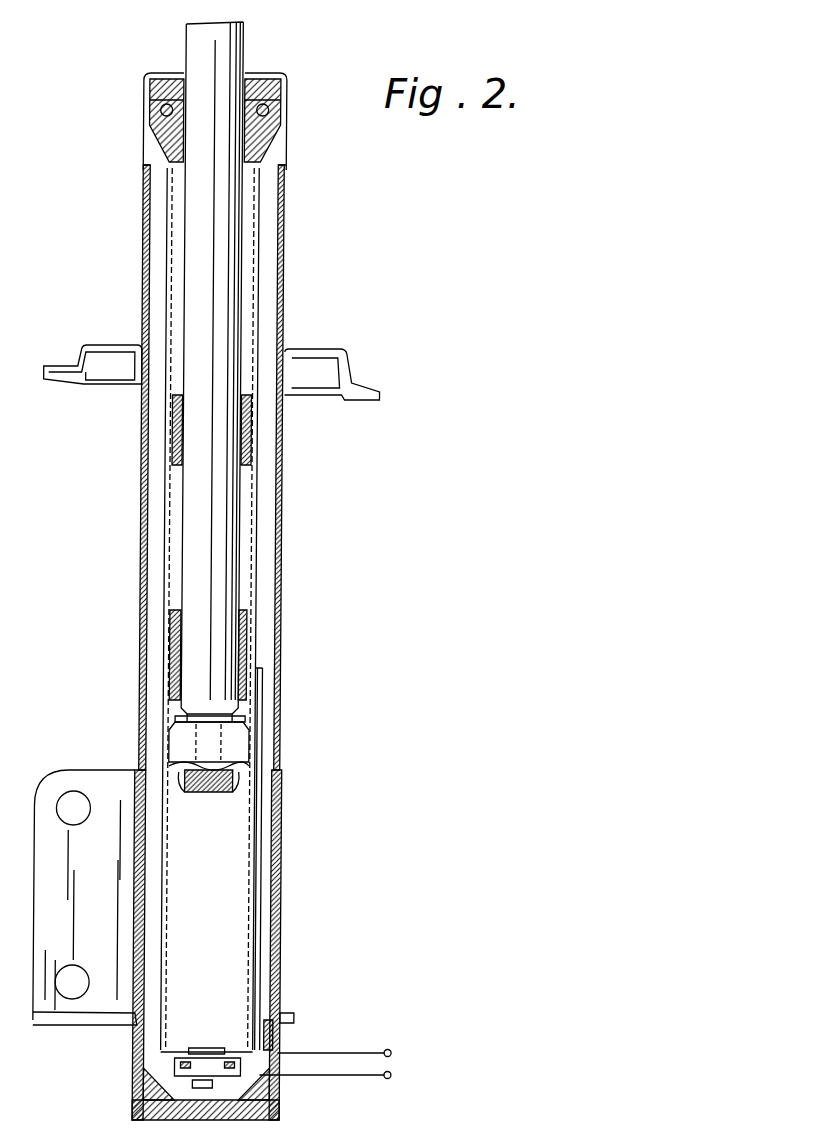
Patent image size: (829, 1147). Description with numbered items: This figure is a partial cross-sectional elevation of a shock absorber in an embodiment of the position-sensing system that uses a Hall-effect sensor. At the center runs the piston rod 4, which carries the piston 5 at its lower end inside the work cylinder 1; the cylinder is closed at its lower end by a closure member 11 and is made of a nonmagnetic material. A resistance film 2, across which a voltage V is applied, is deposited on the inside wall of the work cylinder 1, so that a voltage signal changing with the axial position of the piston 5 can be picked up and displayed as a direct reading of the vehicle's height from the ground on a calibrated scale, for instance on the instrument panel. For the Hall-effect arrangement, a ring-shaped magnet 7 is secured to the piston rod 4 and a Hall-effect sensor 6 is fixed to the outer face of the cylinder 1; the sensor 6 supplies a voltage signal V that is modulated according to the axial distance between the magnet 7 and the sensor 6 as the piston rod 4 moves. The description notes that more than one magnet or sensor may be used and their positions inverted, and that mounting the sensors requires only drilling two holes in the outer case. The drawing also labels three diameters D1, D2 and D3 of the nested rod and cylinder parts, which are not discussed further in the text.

The work cylinder 1 is at (257, 868).
The resistance film 2 is at (246, 965).
The piston rod 4 is at (236, 52).
The piston 5 is at (254, 729).
The Hall-effect sensor 6 is at (256, 655).
The ring-shaped magnet 7 is at (170, 622).
The closure member 11 is at (283, 756).
The diameter D1 is at (250, 508).
The diameter D2 is at (243, 263).
The diameter D3 is at (290, 565).
The voltage V is at (336, 1064).